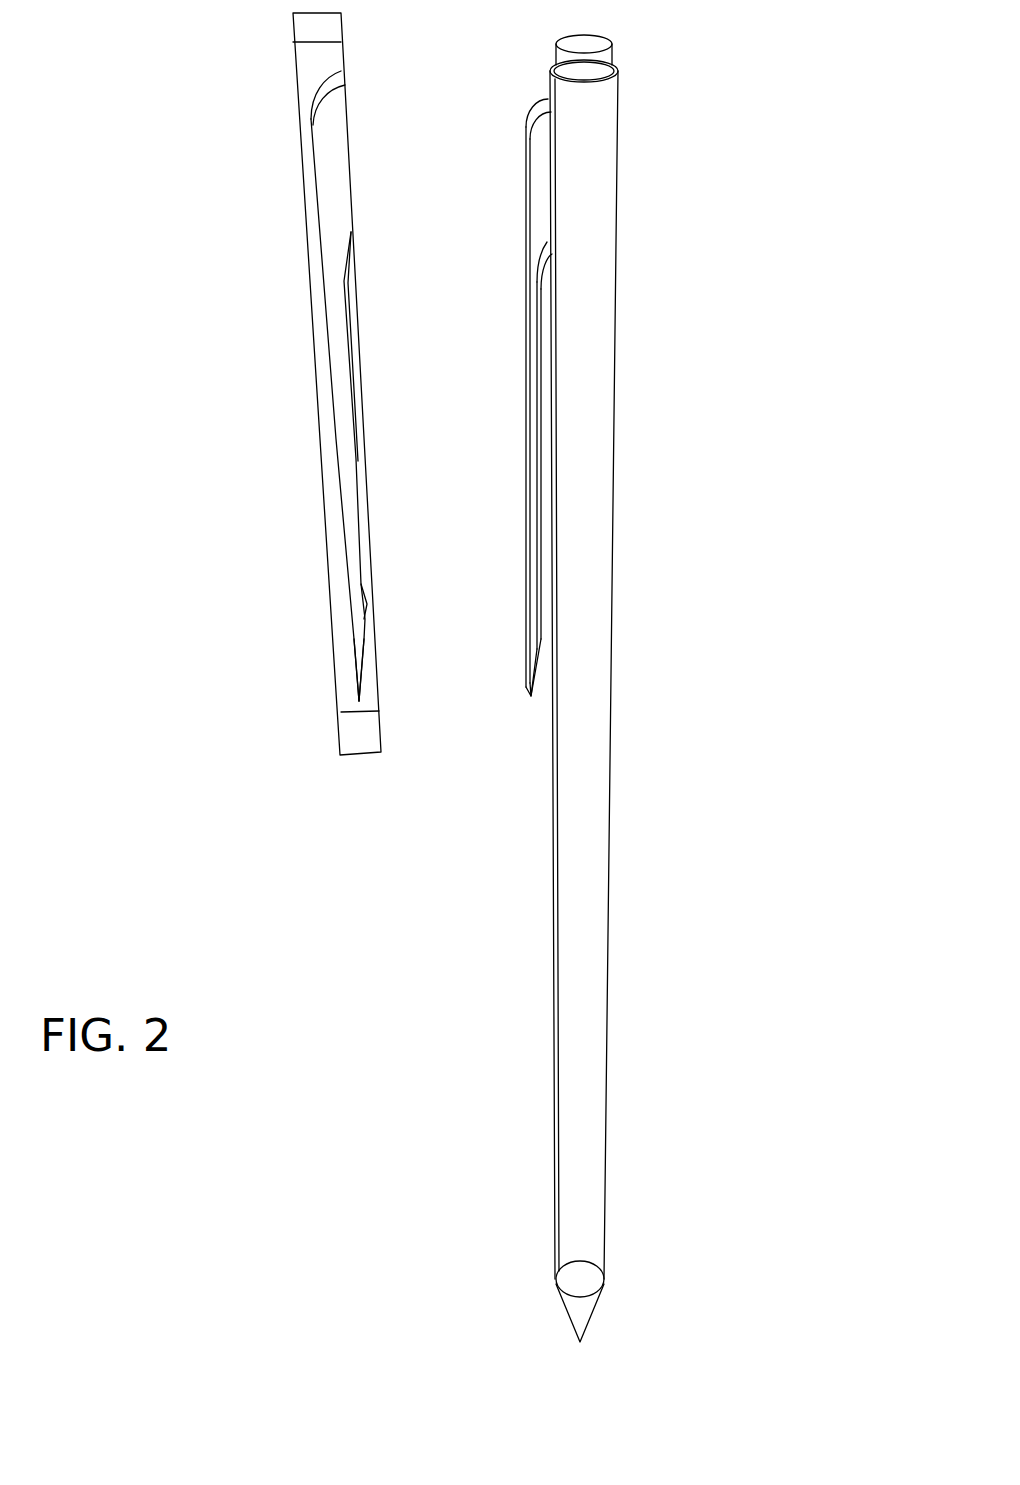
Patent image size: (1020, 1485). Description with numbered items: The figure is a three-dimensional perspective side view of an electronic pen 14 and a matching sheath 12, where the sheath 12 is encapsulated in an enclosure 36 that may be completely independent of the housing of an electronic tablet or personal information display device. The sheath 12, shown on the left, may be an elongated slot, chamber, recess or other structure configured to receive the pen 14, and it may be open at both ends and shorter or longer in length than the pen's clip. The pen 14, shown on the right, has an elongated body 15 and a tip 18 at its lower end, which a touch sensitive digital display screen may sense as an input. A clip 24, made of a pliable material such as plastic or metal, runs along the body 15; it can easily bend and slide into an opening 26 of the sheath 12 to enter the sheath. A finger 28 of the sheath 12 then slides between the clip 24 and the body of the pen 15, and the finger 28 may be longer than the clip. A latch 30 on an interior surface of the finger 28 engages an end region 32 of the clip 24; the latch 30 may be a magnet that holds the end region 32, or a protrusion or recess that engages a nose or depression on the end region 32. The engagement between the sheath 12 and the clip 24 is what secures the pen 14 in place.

The sheath 12 is at (333, 209).
The electronic pen 14 is at (670, 1155).
The body of the pen 15 is at (590, 783).
The tip 18 is at (587, 1334).
The clip 24 is at (527, 400).
The opening 26 is at (352, 157).
The finger 28 is at (347, 352).
The latch 30 is at (377, 615).
The end region 32 is at (543, 645).
The enclosure 36 is at (295, 720).